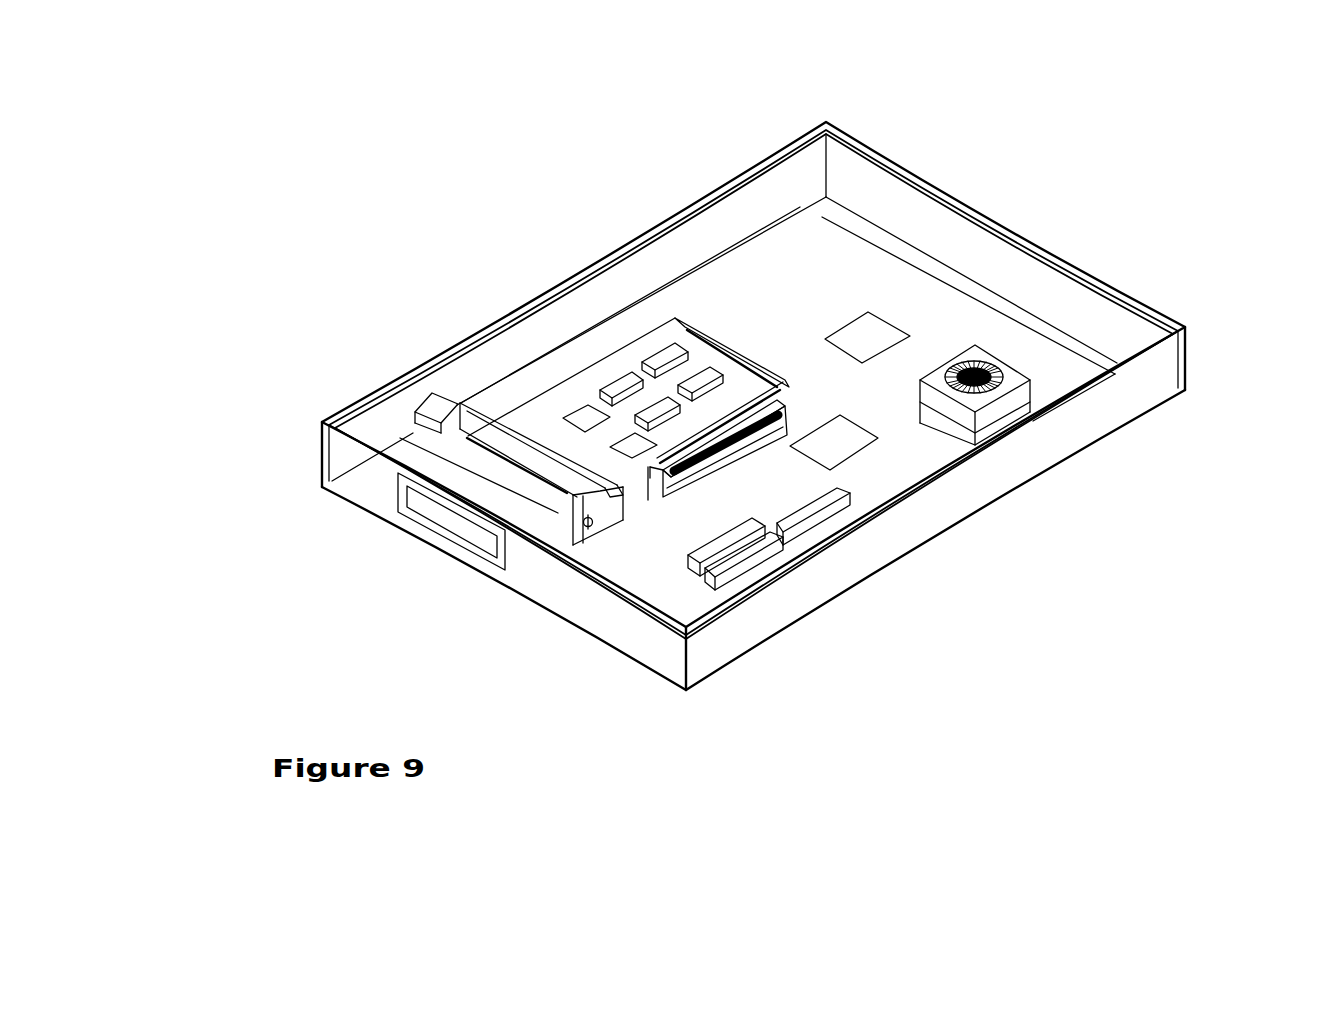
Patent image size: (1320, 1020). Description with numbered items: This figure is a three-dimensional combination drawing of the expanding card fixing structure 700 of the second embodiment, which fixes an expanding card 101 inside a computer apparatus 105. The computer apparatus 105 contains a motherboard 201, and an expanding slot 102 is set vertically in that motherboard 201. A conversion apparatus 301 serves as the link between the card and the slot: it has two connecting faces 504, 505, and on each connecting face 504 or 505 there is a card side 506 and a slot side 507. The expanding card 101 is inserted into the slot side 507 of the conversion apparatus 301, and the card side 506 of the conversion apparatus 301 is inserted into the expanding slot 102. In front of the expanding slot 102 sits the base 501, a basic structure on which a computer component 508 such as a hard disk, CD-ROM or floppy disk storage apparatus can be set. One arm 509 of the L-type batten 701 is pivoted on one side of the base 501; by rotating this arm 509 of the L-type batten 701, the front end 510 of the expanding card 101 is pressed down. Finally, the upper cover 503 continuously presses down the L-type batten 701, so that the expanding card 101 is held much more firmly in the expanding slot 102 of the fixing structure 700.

The expanding card fixing structure 700 is at (1117, 104).
The computer apparatus 105 is at (1002, 223).
The upper cover 503 is at (1186, 358).
The motherboard 201 is at (1047, 366).
The conversion apparatus 301 is at (838, 328).
The expanding card 101 is at (610, 364).
The connecting face 505 is at (828, 340).
The card side 506 is at (799, 367).
The front end 510 is at (764, 440).
The expanding slot 102 is at (727, 464).
The L-type batten 701 is at (560, 448).
The arm 509 is at (450, 433).
The base 501 is at (447, 470).
The connecting face 504 is at (596, 523).
The slot side 507 is at (632, 542).
The computer component 508 is at (440, 520).